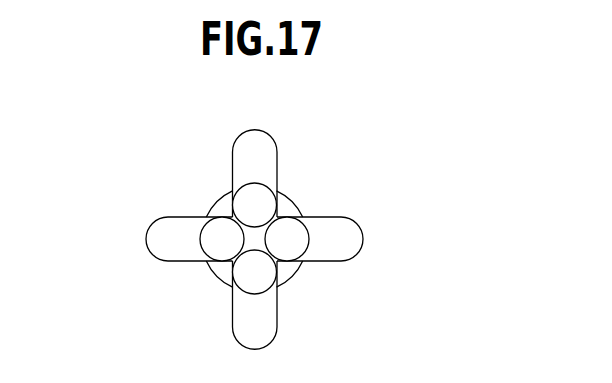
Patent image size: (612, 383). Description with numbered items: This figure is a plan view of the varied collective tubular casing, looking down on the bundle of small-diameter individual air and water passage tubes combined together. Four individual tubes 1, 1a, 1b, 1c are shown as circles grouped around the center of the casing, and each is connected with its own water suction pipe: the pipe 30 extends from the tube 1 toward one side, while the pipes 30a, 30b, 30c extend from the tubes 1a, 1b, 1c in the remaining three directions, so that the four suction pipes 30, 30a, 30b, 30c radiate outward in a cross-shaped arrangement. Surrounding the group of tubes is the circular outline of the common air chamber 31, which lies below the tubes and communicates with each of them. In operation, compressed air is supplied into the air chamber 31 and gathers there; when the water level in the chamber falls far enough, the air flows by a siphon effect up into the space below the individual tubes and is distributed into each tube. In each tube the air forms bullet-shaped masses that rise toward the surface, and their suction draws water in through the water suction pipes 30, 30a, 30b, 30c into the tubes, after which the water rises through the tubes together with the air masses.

The magnetic core leg 1 is at (213, 230).
The magnetic core leg 1a is at (263, 279).
The magnetic core leg 1b is at (298, 242).
The magnetic core leg 1c is at (261, 207).
The water suction pipe 30 is at (170, 247).
The water suction pipe 30a is at (246, 318).
The water suction pipe 30b is at (347, 230).
The water suction pipe 30c is at (260, 149).
The common air chamber 31 is at (302, 207).